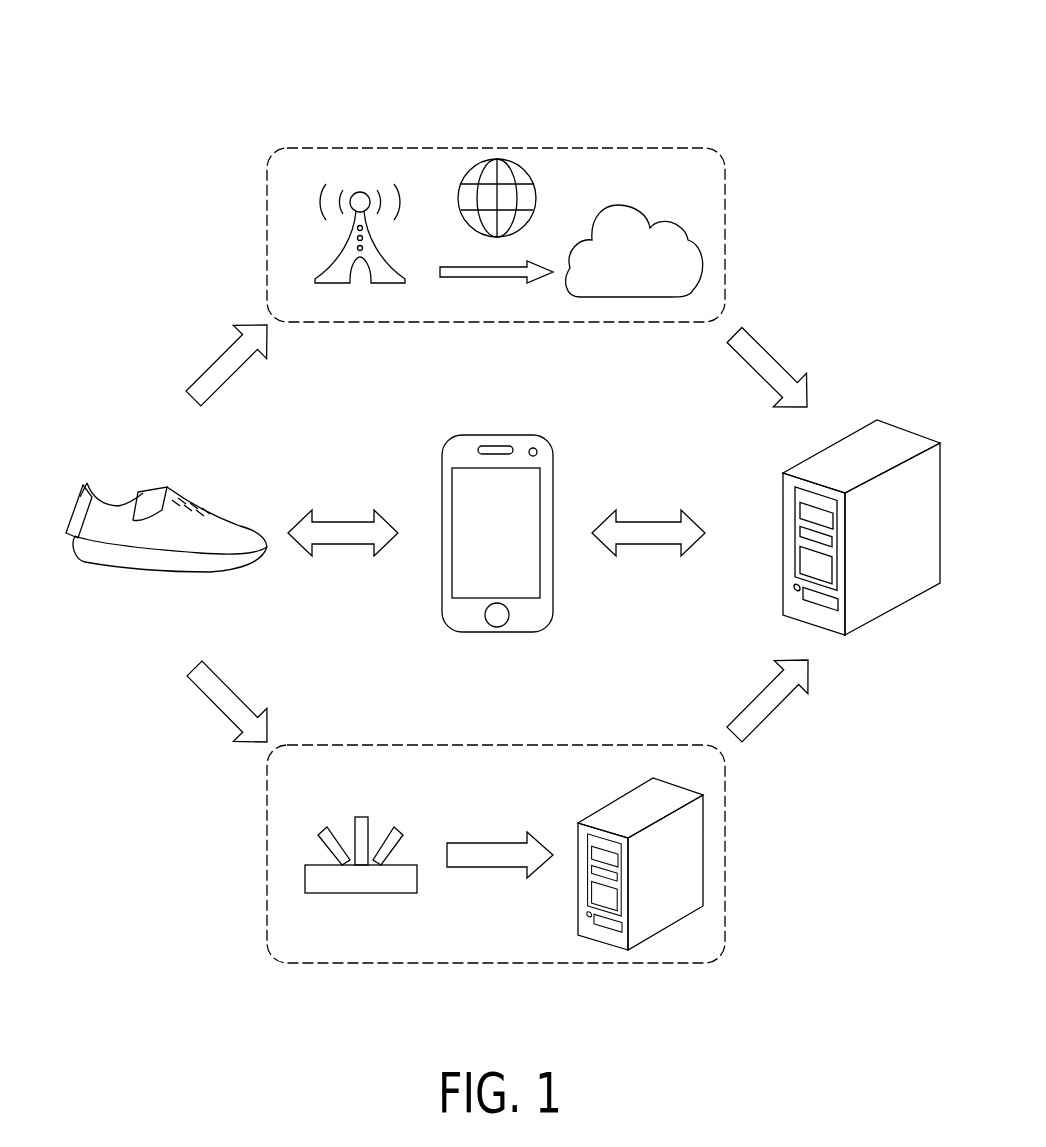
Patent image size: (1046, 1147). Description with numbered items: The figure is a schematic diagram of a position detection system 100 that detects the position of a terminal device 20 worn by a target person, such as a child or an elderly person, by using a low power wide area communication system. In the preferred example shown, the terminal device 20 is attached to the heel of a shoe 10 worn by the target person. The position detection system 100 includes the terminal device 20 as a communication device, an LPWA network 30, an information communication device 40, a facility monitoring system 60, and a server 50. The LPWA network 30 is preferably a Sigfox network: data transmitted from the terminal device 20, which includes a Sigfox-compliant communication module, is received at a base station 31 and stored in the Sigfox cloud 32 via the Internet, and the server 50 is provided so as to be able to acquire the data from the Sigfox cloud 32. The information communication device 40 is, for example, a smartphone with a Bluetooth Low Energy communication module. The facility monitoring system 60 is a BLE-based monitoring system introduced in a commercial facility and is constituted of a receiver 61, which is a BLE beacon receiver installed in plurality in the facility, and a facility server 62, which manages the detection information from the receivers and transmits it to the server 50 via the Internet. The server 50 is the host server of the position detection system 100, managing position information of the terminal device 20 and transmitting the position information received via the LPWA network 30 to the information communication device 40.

The position detection system 100 is at (809, 67).
The shoe 10 is at (202, 512).
The terminal device 20 is at (73, 490).
The LPWA network 30 is at (565, 148).
The base station 31 is at (385, 285).
The Sigfox cloud 32 is at (628, 297).
The information communication device 40 is at (503, 435).
The server 50 is at (898, 433).
The facility monitoring system 60 is at (565, 745).
The receiver 61 is at (362, 880).
The facility server 62 is at (667, 913).